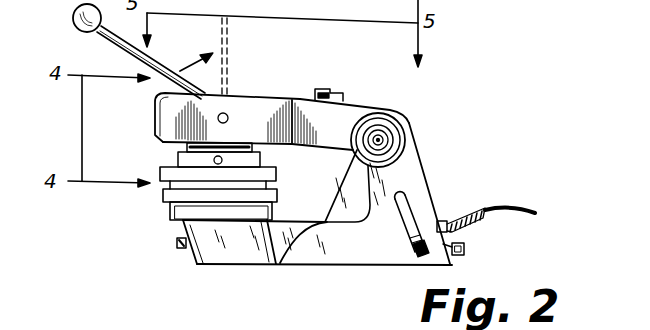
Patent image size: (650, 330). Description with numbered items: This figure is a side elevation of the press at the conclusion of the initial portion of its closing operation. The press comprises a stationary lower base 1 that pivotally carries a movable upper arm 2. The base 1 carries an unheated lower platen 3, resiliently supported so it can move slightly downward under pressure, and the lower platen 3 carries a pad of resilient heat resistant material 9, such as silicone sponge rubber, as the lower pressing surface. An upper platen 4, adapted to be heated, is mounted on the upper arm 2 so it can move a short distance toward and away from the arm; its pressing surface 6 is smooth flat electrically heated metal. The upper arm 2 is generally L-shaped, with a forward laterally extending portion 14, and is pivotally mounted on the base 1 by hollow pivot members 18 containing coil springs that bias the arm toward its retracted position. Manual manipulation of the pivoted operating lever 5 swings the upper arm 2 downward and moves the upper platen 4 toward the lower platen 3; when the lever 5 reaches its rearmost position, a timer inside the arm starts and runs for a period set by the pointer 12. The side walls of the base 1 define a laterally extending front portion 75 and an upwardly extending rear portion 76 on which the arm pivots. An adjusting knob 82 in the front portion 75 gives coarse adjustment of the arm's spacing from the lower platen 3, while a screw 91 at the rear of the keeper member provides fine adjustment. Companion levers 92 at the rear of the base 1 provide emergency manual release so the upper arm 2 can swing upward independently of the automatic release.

The lower base 1 is at (298, 264).
The upper arm 2 is at (250, 107).
The lower platen 3 is at (170, 207).
The upper platen 4 is at (168, 160).
The operating lever 5 is at (152, 62).
The pressing surface 6 is at (162, 175).
The pad of resilient heat resistant material 9 is at (165, 193).
The pointer 12 is at (343, 95).
The forward laterally extending portion 14 is at (304, 100).
The hollow pivot members 18 is at (406, 125).
The front portion 75 is at (283, 233).
The rear portion 76 is at (405, 178).
The adjusting knob 82 is at (180, 243).
The screw 91 is at (465, 248).
The companion levers 92 is at (412, 207).